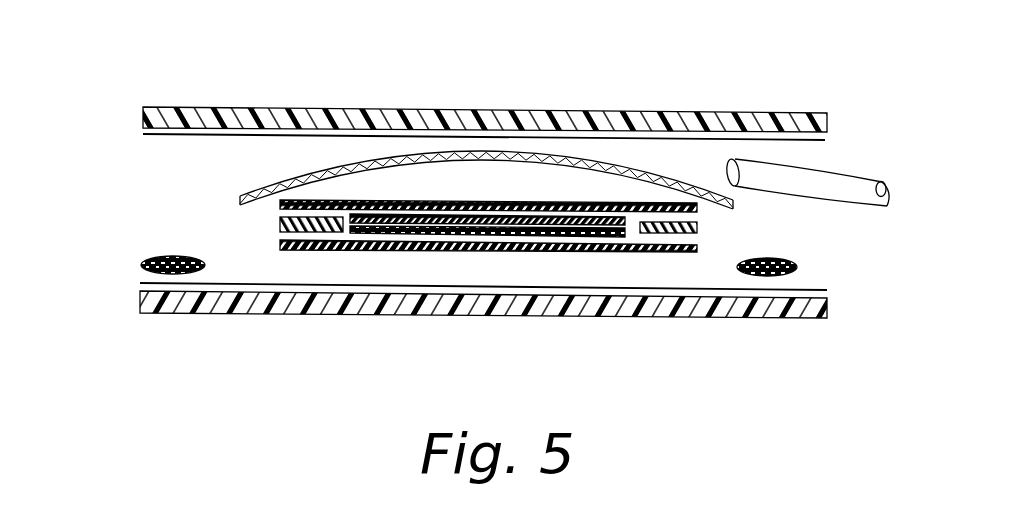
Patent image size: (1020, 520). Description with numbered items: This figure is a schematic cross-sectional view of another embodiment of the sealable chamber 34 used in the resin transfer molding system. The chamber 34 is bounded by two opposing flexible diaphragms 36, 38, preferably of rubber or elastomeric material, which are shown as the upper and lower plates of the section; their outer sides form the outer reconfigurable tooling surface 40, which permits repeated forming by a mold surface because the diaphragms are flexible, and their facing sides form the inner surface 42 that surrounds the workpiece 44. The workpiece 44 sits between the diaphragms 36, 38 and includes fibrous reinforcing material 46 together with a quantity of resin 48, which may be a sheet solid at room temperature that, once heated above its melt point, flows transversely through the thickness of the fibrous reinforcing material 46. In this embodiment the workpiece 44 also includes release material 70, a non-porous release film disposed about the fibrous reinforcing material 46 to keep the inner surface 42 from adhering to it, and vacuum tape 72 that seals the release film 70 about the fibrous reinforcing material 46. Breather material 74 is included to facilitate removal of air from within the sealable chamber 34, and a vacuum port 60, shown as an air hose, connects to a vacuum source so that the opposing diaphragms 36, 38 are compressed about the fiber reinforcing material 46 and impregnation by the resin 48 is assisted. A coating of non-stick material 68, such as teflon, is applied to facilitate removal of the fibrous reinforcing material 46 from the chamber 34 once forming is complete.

The sealable chamber 34 is at (262, 277).
The flexible diaphragm 36 is at (845, 115).
The flexible diaphragm 38 is at (840, 308).
The outer reconfigurable tooling surface 40 is at (525, 217).
The inner surface 42 is at (808, 141).
The workpiece 44 is at (404, 270).
The fibrous reinforcing material 46 is at (487, 300).
The resin 48 is at (420, 232).
The vacuum port 60 is at (799, 192).
The coating of non-stick material 68 is at (167, 256).
The release material 70 is at (612, 349).
The vacuum tape 72 is at (718, 231).
The breather material 74 is at (540, 157).